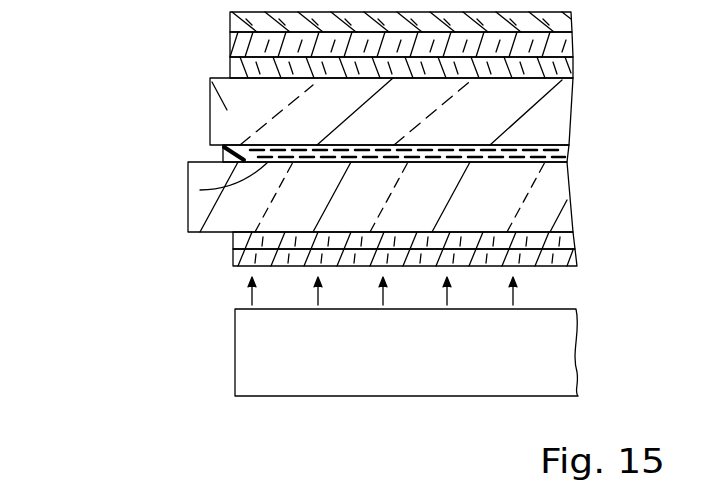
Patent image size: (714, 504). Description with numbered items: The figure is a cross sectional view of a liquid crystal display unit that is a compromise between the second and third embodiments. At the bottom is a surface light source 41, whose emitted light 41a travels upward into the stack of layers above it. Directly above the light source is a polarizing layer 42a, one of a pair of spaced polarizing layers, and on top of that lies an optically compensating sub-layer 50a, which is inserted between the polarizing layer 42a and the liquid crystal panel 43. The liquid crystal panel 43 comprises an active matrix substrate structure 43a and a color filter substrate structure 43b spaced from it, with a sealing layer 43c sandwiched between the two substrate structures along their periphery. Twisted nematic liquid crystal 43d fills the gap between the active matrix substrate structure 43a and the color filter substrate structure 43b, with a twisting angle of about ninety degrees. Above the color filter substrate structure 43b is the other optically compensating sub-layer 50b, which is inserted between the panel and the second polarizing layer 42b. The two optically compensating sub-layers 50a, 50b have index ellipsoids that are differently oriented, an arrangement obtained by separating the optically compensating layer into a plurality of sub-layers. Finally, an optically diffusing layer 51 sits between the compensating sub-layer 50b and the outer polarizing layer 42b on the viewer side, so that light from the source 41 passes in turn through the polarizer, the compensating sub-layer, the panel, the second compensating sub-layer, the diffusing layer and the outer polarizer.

The surface light source 41 is at (250, 377).
The light from the surface light source 41a is at (575, 298).
The polarizing layer 42a is at (233, 260).
The polarizing layer 42b is at (230, 12).
The liquid crystal panel 43 is at (63, 143).
The active matrix substrate structure 43a is at (200, 212).
The color filter substrate structure 43b is at (225, 108).
The sealing layer 43c is at (223, 152).
The twisted nematic liquid crystal 43d is at (200, 190).
The optically compensating sub-layer 50a is at (228, 240).
The optically compensating sub-layer 50b is at (229, 68).
The optically diffusing layer 51 is at (230, 46).